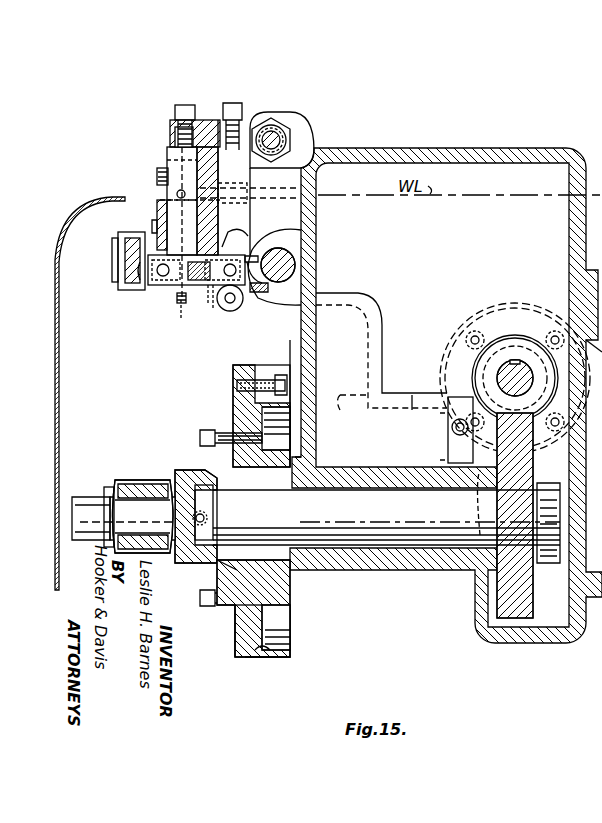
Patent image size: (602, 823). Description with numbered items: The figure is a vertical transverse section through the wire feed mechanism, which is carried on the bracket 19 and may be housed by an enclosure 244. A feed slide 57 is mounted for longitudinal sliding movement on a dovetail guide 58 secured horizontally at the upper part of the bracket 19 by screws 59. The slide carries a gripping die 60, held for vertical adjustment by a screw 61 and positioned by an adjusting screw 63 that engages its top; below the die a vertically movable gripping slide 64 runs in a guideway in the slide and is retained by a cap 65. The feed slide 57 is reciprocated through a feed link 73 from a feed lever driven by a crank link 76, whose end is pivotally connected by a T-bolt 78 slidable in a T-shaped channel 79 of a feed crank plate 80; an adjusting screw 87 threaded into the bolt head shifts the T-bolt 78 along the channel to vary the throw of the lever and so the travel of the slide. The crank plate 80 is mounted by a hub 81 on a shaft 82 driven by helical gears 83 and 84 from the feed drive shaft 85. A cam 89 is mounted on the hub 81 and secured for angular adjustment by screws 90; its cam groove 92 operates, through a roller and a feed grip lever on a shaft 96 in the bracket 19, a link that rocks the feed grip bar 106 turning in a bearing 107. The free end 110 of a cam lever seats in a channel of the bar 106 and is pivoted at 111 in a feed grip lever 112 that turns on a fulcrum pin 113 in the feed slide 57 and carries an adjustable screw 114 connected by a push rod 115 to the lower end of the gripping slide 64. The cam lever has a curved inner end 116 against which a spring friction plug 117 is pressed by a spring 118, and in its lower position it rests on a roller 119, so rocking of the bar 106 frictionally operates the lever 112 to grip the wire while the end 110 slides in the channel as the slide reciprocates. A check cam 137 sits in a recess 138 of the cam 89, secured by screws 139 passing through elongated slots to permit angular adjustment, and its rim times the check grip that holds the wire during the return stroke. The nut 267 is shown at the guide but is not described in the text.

The bracket 19 is at (454, 152).
The feed slide 57 is at (207, 122).
The dovetail guide 58 is at (262, 140).
The screws 59 is at (254, 188).
The gripping die 60 is at (167, 157).
The screw 61 is at (156, 173).
The adjusting screw 63 is at (178, 110).
The gripping slide 64 is at (172, 208).
The cap 65 is at (156, 215).
The feed link 73 is at (125, 258).
The crank link 76 is at (112, 500).
The T-bolt 78 is at (132, 494).
The T-shaped channel 79 is at (182, 548).
The feed crank plate 80 is at (240, 615).
The hub 81 is at (275, 576).
The shaft 82 is at (390, 528).
The helical gear 83 is at (500, 627).
The helical gear 84 is at (512, 342).
The feed drive shaft 85 is at (498, 378).
The adjusting screw 87 is at (206, 518).
The cam 89 is at (290, 655).
The screws 90 is at (200, 438).
The cam groove 92 is at (292, 630).
The shaft 96 is at (412, 395).
The feed grip bar 106 is at (296, 263).
The bearing 107 is at (280, 232).
The cam lever 110 is at (268, 288).
The pivot 111 is at (226, 290).
The feed grip lever 112 is at (192, 281).
The fulcrum pin 113 is at (160, 276).
The adjustable screw 114 is at (176, 297).
The push rod 115 is at (116, 276).
The curved inner end 116 is at (200, 300).
The spring friction plug 117 is at (190, 290).
The spring 118 is at (260, 236).
The roller 119 is at (236, 305).
The check cam 137 is at (248, 658).
The recess 138 is at (268, 656).
The screws 139 is at (268, 378).
The enclosure 244 is at (68, 206).
The nut 267 is at (280, 140).